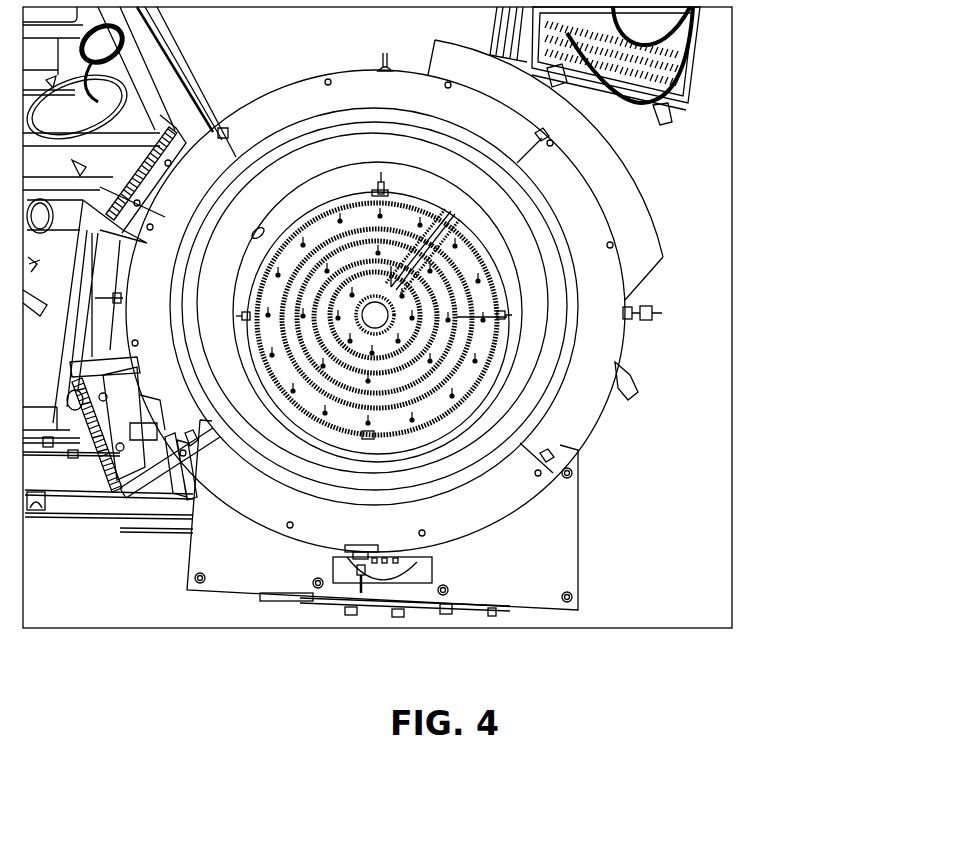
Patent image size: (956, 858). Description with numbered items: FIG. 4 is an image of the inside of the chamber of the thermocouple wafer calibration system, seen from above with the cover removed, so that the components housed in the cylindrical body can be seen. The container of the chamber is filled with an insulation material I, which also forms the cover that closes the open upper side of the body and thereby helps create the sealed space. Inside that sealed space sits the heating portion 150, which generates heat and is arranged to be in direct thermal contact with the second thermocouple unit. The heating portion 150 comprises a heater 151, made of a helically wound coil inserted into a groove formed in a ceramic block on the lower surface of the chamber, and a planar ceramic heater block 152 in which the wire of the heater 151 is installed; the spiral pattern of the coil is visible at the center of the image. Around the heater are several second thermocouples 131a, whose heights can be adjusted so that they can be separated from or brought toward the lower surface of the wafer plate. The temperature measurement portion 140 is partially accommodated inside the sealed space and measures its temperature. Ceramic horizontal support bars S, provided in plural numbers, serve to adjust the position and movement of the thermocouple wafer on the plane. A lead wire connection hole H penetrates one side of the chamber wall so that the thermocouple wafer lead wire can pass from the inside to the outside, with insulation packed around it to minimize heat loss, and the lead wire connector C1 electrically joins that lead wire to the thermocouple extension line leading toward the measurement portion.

The insulation material I is at (515, 228).
The temperature measurement portion 140 is at (436, 248).
The heating portion 150 is at (553, 319).
The heater 151 is at (470, 333).
The heater block 152 is at (480, 347).
The second thermocouple 131a is at (450, 392).
The lead wire connector C1 is at (102, 462).
The lead wire connection hole H is at (147, 427).
The horizontal support bar S is at (350, 585).